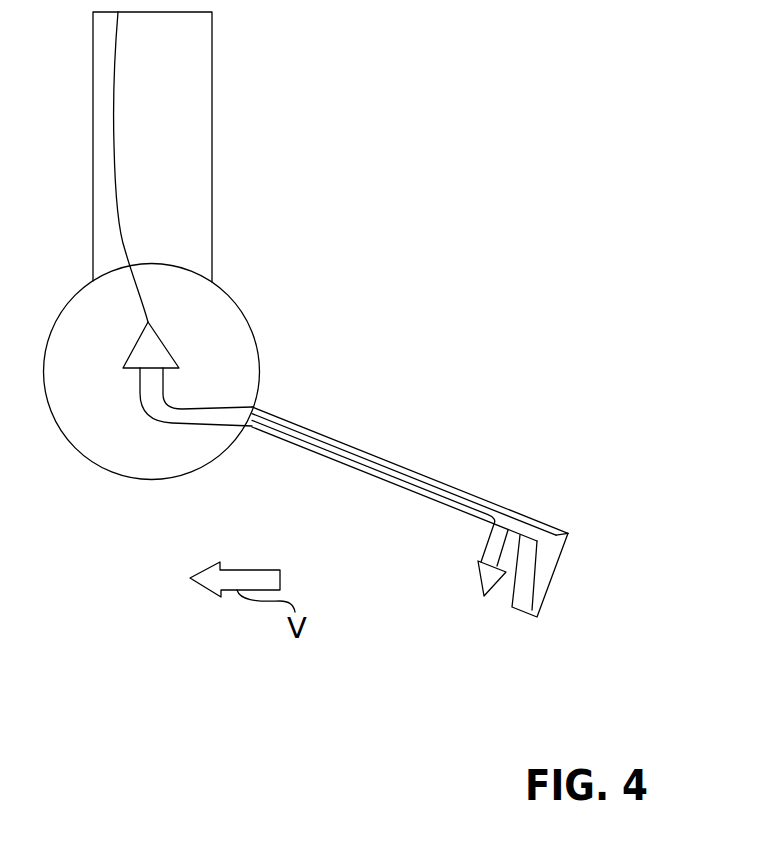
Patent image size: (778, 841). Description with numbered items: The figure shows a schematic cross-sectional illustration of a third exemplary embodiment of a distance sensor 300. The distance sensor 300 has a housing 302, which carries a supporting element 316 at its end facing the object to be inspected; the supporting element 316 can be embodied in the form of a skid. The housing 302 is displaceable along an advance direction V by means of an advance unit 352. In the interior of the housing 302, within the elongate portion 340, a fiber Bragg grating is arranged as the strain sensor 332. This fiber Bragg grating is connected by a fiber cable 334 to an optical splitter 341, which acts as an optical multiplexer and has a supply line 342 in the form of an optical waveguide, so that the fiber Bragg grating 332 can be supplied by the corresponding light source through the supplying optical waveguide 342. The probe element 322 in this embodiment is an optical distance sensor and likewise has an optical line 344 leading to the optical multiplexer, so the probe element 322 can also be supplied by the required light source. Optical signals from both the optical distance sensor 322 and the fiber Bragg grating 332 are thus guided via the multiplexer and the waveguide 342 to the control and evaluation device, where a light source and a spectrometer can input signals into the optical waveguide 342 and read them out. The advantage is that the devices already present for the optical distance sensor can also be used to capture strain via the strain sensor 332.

The distance sensor 300 is at (324, 354).
The housing 302 is at (552, 510).
The supporting element 316 is at (538, 617).
The probe element 322 is at (466, 572).
The strain sensor 332 is at (410, 464).
The fiber cable 334 is at (170, 397).
The elongate portion 340 is at (423, 456).
The optical splitter 341 is at (165, 347).
The supply line 342 is at (114, 145).
The optical line 344 is at (158, 416).
The advance unit 352 is at (184, 478).